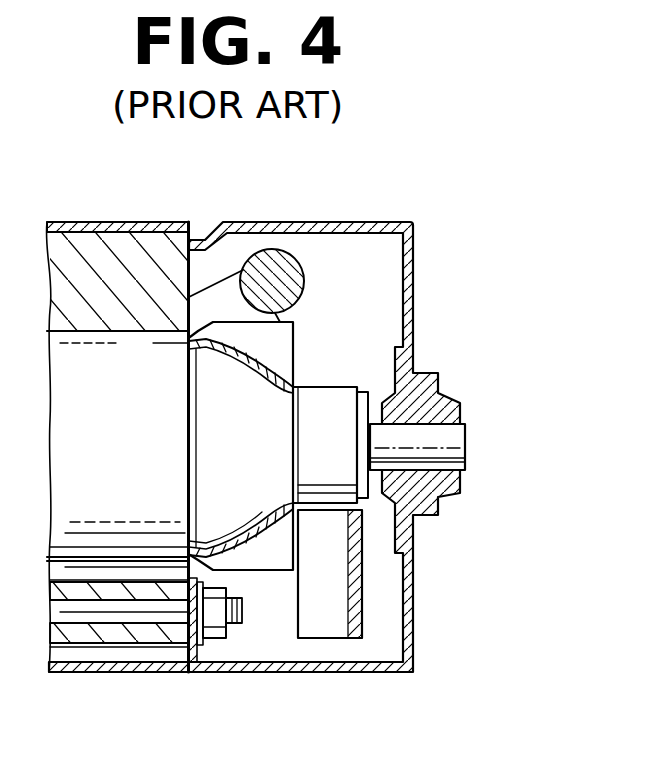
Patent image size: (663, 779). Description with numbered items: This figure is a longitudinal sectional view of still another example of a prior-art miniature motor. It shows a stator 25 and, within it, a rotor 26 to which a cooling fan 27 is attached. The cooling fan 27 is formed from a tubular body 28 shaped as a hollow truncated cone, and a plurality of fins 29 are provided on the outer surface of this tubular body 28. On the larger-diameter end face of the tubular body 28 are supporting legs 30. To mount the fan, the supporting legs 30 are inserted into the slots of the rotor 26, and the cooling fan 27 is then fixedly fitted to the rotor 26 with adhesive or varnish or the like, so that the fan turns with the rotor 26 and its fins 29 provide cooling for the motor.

The stator 25 is at (108, 258).
The rotor 26 is at (122, 537).
The cooling fan 27 is at (283, 345).
The tubular body 28 is at (245, 543).
The fins 29 is at (304, 447).
The supporting legs 30 is at (160, 348).